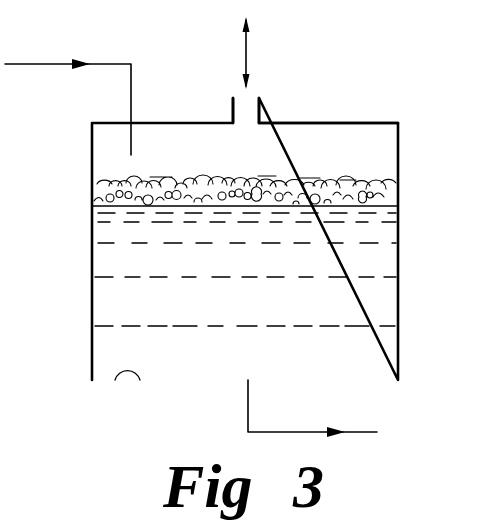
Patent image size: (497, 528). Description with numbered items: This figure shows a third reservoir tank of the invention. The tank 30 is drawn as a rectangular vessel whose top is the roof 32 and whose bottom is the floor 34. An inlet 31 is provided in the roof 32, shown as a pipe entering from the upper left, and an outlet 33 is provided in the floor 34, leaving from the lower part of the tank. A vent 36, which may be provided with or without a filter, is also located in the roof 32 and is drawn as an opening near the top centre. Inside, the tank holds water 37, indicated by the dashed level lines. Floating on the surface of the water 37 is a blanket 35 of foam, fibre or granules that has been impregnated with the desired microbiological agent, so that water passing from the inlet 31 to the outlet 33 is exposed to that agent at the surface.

The tank 30 is at (400, 260).
The inlet 31 is at (131, 100).
The roof 32 is at (353, 121).
The outlet 33 is at (243, 383).
The floor 34 is at (116, 379).
The blanket 35 is at (350, 191).
The vent 36 is at (248, 111).
The water 37 is at (383, 316).